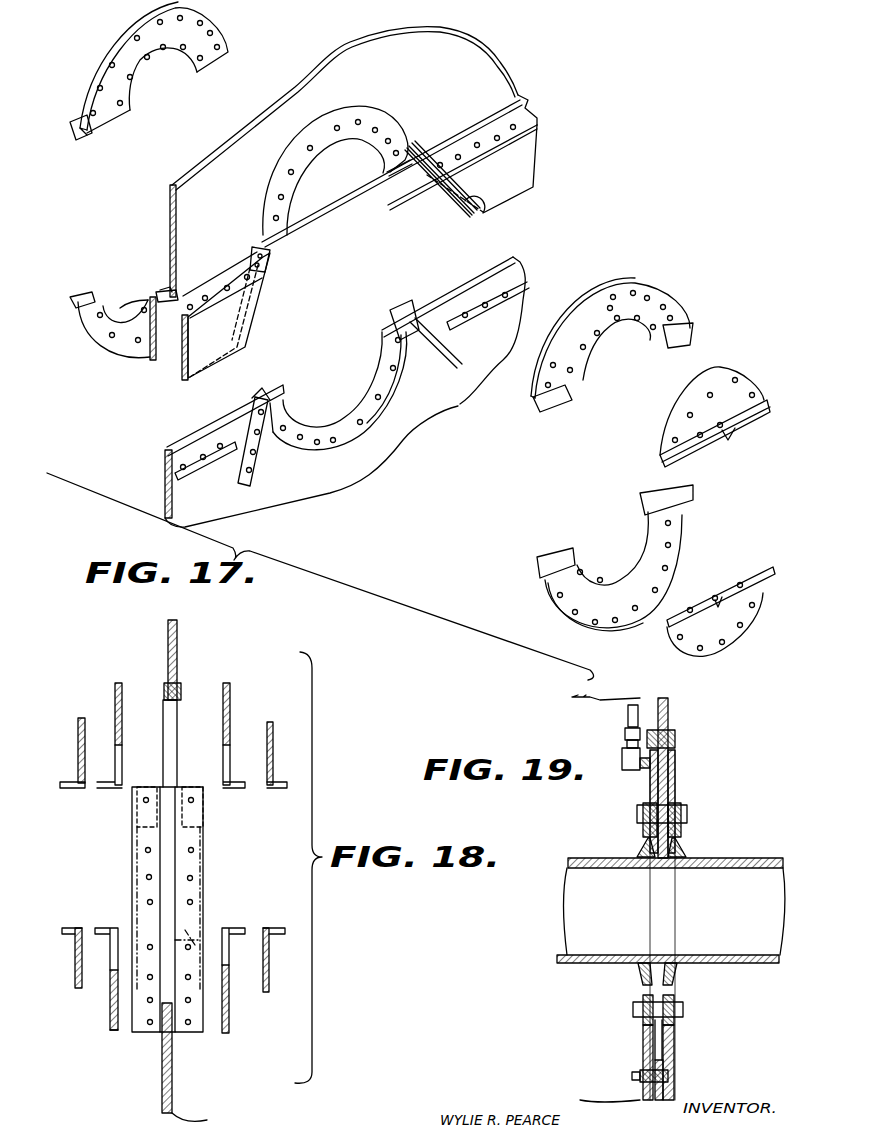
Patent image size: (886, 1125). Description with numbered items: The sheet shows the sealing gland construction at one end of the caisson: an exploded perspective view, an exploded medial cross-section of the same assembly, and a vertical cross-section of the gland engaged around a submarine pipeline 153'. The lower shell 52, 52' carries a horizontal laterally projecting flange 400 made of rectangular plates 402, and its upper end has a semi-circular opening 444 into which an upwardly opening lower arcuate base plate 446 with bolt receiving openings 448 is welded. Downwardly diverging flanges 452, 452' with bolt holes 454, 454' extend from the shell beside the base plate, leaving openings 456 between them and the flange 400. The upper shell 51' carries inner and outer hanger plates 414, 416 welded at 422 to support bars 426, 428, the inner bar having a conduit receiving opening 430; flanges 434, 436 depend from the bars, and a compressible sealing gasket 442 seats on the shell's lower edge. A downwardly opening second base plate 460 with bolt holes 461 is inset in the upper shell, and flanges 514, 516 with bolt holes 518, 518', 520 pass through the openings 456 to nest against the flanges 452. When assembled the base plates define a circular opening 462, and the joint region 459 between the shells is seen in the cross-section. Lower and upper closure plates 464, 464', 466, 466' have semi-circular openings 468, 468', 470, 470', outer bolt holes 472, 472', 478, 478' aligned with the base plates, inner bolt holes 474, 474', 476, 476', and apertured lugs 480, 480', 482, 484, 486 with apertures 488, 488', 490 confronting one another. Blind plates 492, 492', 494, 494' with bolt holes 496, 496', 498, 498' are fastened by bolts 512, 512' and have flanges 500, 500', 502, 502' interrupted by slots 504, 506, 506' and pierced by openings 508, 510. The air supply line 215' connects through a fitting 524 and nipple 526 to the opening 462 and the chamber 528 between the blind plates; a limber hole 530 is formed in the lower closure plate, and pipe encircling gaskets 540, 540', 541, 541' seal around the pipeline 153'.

In FIG. 17, the upper shell 51' is at (355, 162).
In FIG. 18, the upper shell 51' is at (190, 703).
In FIG. 19, the upper shell 51' is at (681, 778).
In FIG. 17, the lower shell 52 is at (322, 392).
In FIG. 17, the lower shell 52' is at (480, 415).
In FIG. 18, the lower shell 52' is at (189, 1062).
In FIG. 19, the lower shell 52' is at (620, 1080).
In FIG. 19, the submarine pipeline 153' is at (679, 898).
In FIG. 19, the high pressure air supply line 215' is at (607, 737).
In FIG. 17, the horizontal laterally projecting flange 400 is at (222, 462).
In FIG. 17, the rectangular plates 402 is at (183, 485).
In FIG. 17, the inner hanger plate 414 is at (462, 125).
In FIG. 17, the outer hanger plate 416 is at (158, 290).
In FIG. 17, the weld 422 is at (516, 97).
In FIG. 17, the inner support bar 426 is at (538, 116).
In FIG. 18, the inner support bar 426 is at (166, 909).
In FIG. 17, the outer support bar 428 is at (158, 292).
In FIG. 18, the outer support bar 428 is at (196, 812).
In FIG. 17, the conduit receiving opening 430 is at (695, 340).
In FIG. 17, the inner flange 434 is at (538, 160).
In FIG. 18, the inner flange 434 is at (205, 852).
In FIG. 17, the outer flange 436 is at (165, 345).
In FIG. 18, the outer flange 436 is at (132, 857).
In FIG. 17, the compressible sealing gasket 442 is at (285, 225).
In FIG. 18, the compressible sealing gasket 442 is at (178, 765).
In FIG. 17, the semi-circular opening 444 is at (295, 450).
In FIG. 18, the semi-circular opening 444 is at (162, 1030).
In FIG. 17, the lower arcuate base plate 446 is at (340, 445).
In FIG. 18, the lower arcuate base plate 446 is at (175, 1035).
In FIG. 19, the lower arcuate base plate 446 is at (655, 1060).
In FIG. 17, the bolt receiving openings 448 is at (318, 448).
In FIG. 18, the bolt receiving openings 448 is at (162, 1015).
In FIG. 17, the downwardly diverging flanges 452 is at (379, 403).
In FIG. 18, the downwardly diverging flanges 452 is at (223, 905).
In FIG. 17, the downwardly diverging flanges 452' is at (415, 290).
In FIG. 18, the downwardly diverging flanges 452' is at (119, 903).
In FIG. 17, the bolt holes 454 is at (338, 416).
In FIG. 18, the bolt holes 454 is at (216, 930).
In FIG. 18, the bolt holes 454' is at (101, 916).
In FIG. 17, the openings 456 is at (250, 408).
In FIG. 18, the joint 459 is at (182, 688).
In FIG. 17, the second arcuately shaped base plate 460 is at (350, 135).
In FIG. 18, the second arcuately shaped base plate 460 is at (163, 688).
In FIG. 17, the bolt holes 461 is at (310, 155).
In FIG. 18, the bolt holes 461 is at (182, 692).
In FIG. 19, the circular opening 462 is at (668, 770).
In FIG. 17, the lower closure plate 464 is at (613, 574).
In FIG. 18, the lower closure plate 464 is at (166, 992).
In FIG. 17, the lower closure plate 464' is at (102, 337).
In FIG. 17, the upper closure plate 466 is at (610, 331).
In FIG. 18, the upper closure plate 466 is at (251, 668).
In FIG. 17, the upper closure plate 466' is at (149, 115).
In FIG. 18, the upper closure plate 466' is at (120, 664).
In FIG. 17, the semi-circular opening 468 is at (616, 524).
In FIG. 18, the semi-circular opening 468 is at (247, 949).
In FIG. 17, the semi-circular opening 468' is at (116, 272).
In FIG. 18, the semi-circular opening 468' is at (103, 957).
In FIG. 17, the semi-circular opening 470 is at (423, 224).
In FIG. 18, the semi-circular opening 470 is at (247, 754).
In FIG. 18, the semi-circular opening 470' is at (143, 745).
In FIG. 17, the bolt holes 472 is at (588, 627).
In FIG. 18, the bolt holes 472 is at (246, 1009).
In FIG. 17, the bolt holes 472' is at (100, 373).
In FIG. 17, the bolt holes 474 is at (658, 437).
In FIG. 18, the bolt holes 474 is at (265, 839).
In FIG. 17, the bolt holes 474' is at (65, 340).
In FIG. 17, the bolt holes 476 is at (616, 359).
In FIG. 17, the bolt holes 476' is at (163, 79).
In FIG. 18, the bolt holes 476' is at (172, 850).
In FIG. 17, the bolt holes 478 is at (609, 322).
In FIG. 17, the bolt holes 478' is at (148, 68).
In FIG. 18, the bolt holes 478' is at (169, 850).
In FIG. 17, the lug 480 is at (527, 602).
In FIG. 17, the lug 480' is at (46, 317).
In FIG. 17, the lug 482 is at (695, 500).
In FIG. 18, the lug 482 is at (75, 930).
In FIG. 17, the lug 484 is at (72, 132).
In FIG. 18, the lug 486 is at (98, 790).
In FIG. 17, the lug aperture 488 is at (549, 554).
In FIG. 17, the lug aperture 488' is at (62, 291).
In FIG. 17, the lug aperture 490 is at (680, 495).
In FIG. 17, the lower inner blind plate 492 is at (675, 521).
In FIG. 19, the lower inner blind plate 492 is at (651, 901).
In FIG. 18, the lower blind plate 492' is at (48, 957).
In FIG. 17, the upper inner blind plate 494 is at (716, 408).
In FIG. 18, the upper blind plate 494' is at (65, 739).
In FIG. 17, the bolt holes 496 is at (721, 620).
In FIG. 18, the bolt holes 496 is at (283, 1002).
In FIG. 18, the bolt holes 496' is at (50, 989).
In FIG. 17, the bolt holes 498 is at (686, 374).
In FIG. 18, the bolt holes 498 is at (286, 755).
In FIG. 18, the bolt holes 498' is at (54, 734).
In FIG. 17, the rectangular flange 500 is at (675, 660).
In FIG. 18, the rectangular flange 500 is at (292, 949).
In FIG. 18, the rectangular flange 500' is at (47, 957).
In FIG. 17, the rectangular flange 502 is at (776, 419).
In FIG. 18, the rectangular flange 502 is at (291, 804).
In FIG. 18, the rectangular flange 502' is at (41, 795).
In FIG. 17, the slot 504 is at (740, 580).
In FIG. 18, the slot 504 is at (283, 930).
In FIG. 17, the slot 506 is at (737, 441).
In FIG. 18, the slot 506 is at (290, 770).
In FIG. 18, the slot 506' is at (52, 765).
In FIG. 17, the bolt receiving openings 508 is at (700, 600).
In FIG. 17, the bolt receiving openings 510 is at (700, 445).
In FIG. 19, the fastening bolts 512 is at (635, 914).
In FIG. 19, the fastening bolts 512' is at (715, 800).
In FIG. 17, the downwardly diverging flange 514 is at (270, 270).
In FIG. 18, the downwardly diverging flange 514 is at (138, 790).
In FIG. 17, the downwardly diverging flange 516 is at (435, 205).
In FIG. 18, the downwardly diverging flange 516 is at (190, 800).
In FIG. 17, the bolt holes 518 is at (283, 255).
In FIG. 18, the bolt holes 518' is at (127, 888).
In FIG. 17, the bolt holes 520 is at (425, 190).
In FIG. 18, the bolt holes 520 is at (178, 790).
In FIG. 19, the fitting 524 is at (640, 765).
In FIG. 19, the nipple 526 is at (648, 765).
In FIG. 19, the chamber 528 is at (682, 838).
In FIG. 19, the limber hole 530 is at (675, 1055).
In FIG. 19, the pipe encircling gasket 540 is at (617, 845).
In FIG. 19, the pipe encircling gasket 540' is at (704, 845).
In FIG. 19, the pipe encircling gasket 541 is at (693, 966).
In FIG. 19, the pipe encircling gasket 541' is at (616, 969).